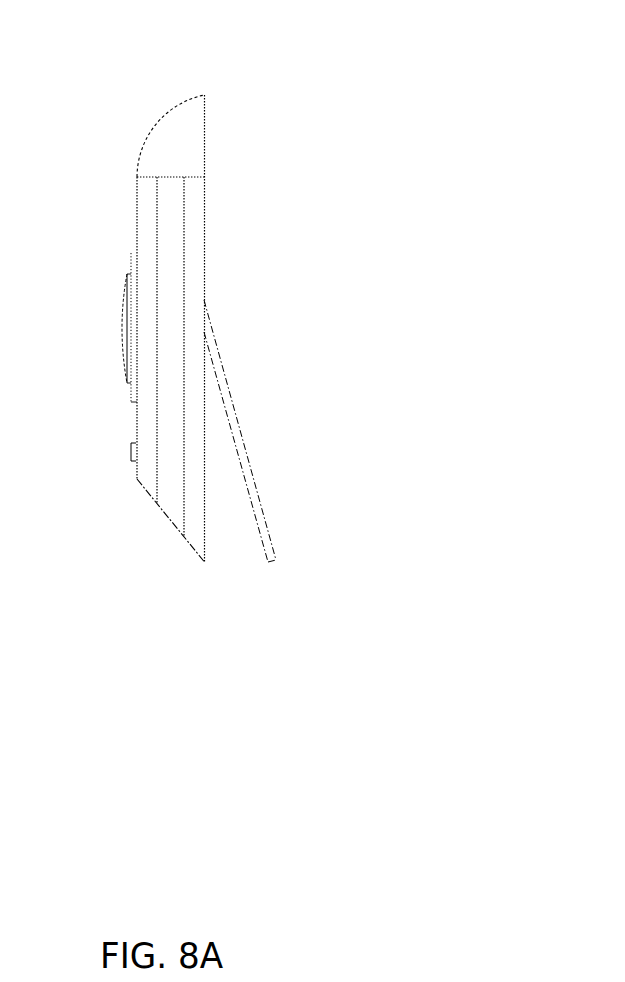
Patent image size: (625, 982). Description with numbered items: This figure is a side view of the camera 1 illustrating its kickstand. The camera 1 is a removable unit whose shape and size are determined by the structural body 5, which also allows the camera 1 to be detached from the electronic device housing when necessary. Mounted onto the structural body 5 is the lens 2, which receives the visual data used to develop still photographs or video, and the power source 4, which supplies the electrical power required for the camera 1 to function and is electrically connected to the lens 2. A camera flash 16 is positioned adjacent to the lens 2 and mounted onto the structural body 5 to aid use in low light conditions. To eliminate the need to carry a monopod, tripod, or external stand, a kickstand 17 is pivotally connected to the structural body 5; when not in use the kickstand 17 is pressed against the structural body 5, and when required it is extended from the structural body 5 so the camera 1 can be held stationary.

The camera 1 is at (193, 62).
The lens 2 is at (122, 329).
The power source 4 is at (137, 257).
The structural body 5 is at (147, 152).
The camera flash 16 is at (127, 450).
The kickstand 17 is at (243, 460).